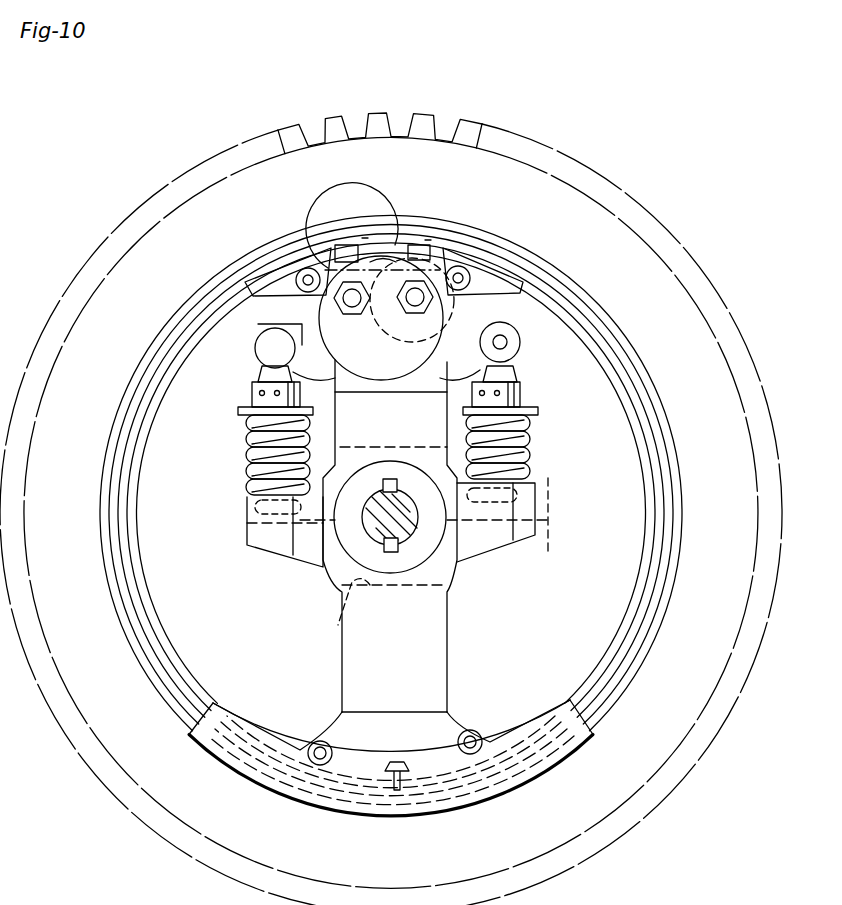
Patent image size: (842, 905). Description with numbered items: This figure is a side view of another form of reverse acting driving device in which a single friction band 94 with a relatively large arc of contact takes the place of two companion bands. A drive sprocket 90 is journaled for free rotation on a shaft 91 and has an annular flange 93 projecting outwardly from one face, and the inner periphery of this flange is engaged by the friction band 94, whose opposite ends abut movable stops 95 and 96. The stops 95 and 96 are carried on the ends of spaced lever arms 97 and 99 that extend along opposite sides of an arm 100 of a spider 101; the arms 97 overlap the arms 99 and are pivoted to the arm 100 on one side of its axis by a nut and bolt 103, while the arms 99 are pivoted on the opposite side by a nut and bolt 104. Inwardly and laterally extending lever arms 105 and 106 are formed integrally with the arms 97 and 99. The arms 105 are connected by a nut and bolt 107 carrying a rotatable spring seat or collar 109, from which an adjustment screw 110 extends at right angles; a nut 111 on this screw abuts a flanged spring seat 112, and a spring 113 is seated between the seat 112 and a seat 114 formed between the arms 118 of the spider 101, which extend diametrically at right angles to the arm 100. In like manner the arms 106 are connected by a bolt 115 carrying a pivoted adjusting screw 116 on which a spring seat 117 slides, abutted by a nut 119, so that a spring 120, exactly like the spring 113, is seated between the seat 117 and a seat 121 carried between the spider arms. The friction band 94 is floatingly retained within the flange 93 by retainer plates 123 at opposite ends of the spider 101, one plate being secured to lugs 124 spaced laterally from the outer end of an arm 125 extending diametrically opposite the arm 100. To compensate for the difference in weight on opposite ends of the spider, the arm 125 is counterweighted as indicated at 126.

The drive sprocket 90 is at (442, 122).
The shaft 91 is at (405, 528).
The annular flange 93 is at (432, 250).
The friction band 94 is at (650, 602).
The movable stop 95 is at (343, 245).
The movable stop 96 is at (428, 242).
The lever arms 97 is at (365, 238).
The lever arms 99 is at (396, 248).
The arm of the spider 100 is at (440, 375).
The spider 101 is at (325, 575).
The nut and bolt 103 is at (345, 300).
The nut and bolt 104 is at (440, 300).
The lever arms 105 is at (500, 322).
The lever arms 106 is at (300, 324).
The nut and bolt 107 is at (505, 345).
The spring seat or collar 109 is at (518, 395).
The adjustment screw 110 is at (440, 328).
The nut 111 is at (425, 400).
The flanged spring seat 112 is at (530, 415).
The spring 113 is at (530, 470).
The seat 114 is at (548, 540).
The bolt 115 is at (262, 348).
The adjusting screw 116 is at (295, 374).
The spring seat 117 is at (315, 411).
The arms of the spider 118 is at (240, 532).
The nut 119 is at (277, 394).
The spring 120 is at (300, 447).
The seat 121 is at (272, 522).
The retainer plates 123 is at (522, 282).
The lugs 124 is at (330, 742).
The arm of the spider 125 is at (455, 722).
The counterweight 126 is at (338, 626).